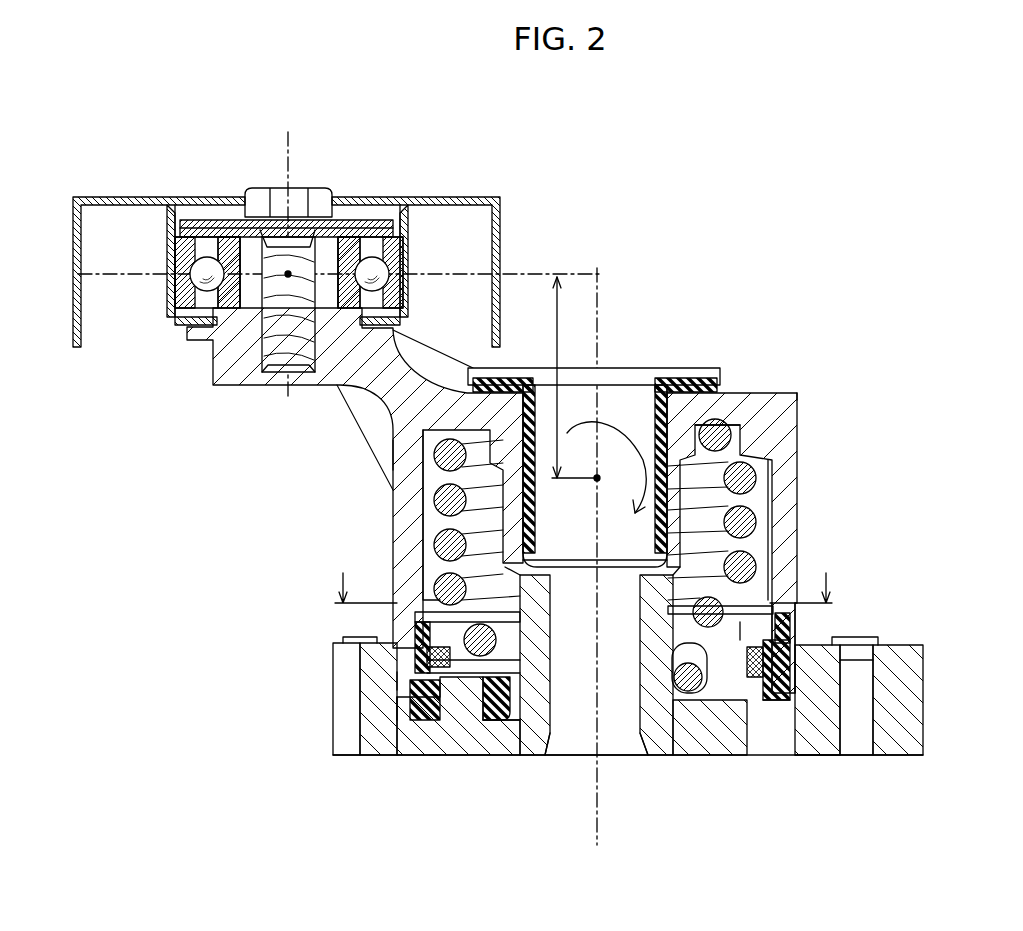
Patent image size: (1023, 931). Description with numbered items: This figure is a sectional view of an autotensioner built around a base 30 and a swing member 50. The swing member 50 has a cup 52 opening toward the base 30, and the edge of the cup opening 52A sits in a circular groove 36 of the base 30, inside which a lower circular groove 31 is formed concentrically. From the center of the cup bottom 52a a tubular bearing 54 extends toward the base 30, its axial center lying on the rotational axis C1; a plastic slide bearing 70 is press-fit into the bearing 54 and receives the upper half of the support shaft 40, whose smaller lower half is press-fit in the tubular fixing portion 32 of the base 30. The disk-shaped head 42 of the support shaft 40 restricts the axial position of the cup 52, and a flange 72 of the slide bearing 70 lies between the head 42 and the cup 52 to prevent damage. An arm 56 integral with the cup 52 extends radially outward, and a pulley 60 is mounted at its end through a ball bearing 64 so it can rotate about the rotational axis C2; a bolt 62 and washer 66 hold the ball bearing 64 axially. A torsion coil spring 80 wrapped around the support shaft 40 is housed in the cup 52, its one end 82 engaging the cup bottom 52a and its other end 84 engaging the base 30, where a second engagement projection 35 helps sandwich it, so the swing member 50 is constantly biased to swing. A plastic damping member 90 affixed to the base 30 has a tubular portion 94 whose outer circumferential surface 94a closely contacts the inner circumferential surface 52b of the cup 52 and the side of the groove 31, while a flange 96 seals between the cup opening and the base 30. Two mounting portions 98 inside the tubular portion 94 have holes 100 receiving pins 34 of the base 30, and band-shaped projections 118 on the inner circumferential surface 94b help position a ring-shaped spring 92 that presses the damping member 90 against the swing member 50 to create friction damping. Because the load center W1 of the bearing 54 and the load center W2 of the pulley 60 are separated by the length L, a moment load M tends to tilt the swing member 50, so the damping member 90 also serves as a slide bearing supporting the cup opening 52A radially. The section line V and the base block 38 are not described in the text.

The base 30 is at (457, 760).
The circular groove 31 is at (413, 700).
The tubular fixing portion 32 is at (533, 632).
The pins 34 is at (432, 758).
The second engagement projection 35 is at (717, 660).
The circular groove 36 is at (397, 672).
The base 38 is at (385, 727).
The support shaft 40 is at (608, 758).
The head 42 is at (690, 362).
The swing member 50 is at (800, 392).
The cup 52 is at (780, 498).
The cup bottom 52a is at (398, 453).
The inner circumferential surface 52b is at (800, 605).
The cup opening 52A is at (815, 755).
The bearing 54 is at (752, 478).
The arm 56 is at (330, 386).
The pulley 60 is at (497, 199).
The bolt 62 is at (297, 200).
The ball bearing 64 is at (180, 300).
The washer 66 is at (387, 220).
The slide bearing 70 is at (675, 432).
The flange 72 is at (690, 382).
The torsion coil spring 80 is at (757, 522).
The one end 82 is at (722, 436).
The other end 84 is at (690, 680).
The damping member 90 is at (762, 720).
The ring-shaped spring 92 is at (398, 655).
The tubular portion 94 is at (415, 612).
The outer circumferential surface 94a is at (845, 660).
The inner circumferential surface 94b is at (745, 632).
The flange 96 is at (350, 757).
The mounting portions 98 is at (503, 705).
The holes 100 is at (497, 728).
The band-shaped projections 118 is at (432, 603).
The length L is at (576, 379).
The moment load M is at (606, 484).
The section line V is at (584, 578).
The load W1 is at (597, 476).
The load W2 is at (289, 272).
The rotational axis C1 is at (596, 835).
The rotational axis C2 is at (283, 140).